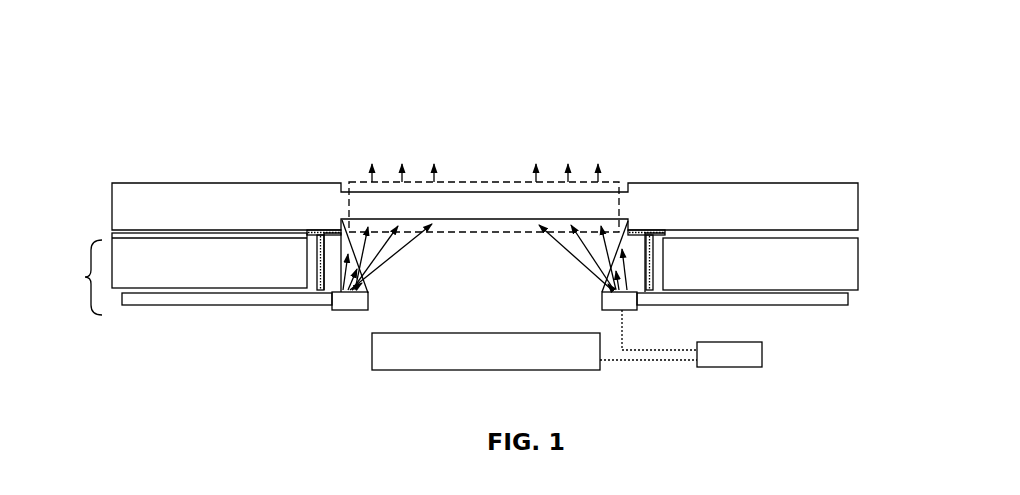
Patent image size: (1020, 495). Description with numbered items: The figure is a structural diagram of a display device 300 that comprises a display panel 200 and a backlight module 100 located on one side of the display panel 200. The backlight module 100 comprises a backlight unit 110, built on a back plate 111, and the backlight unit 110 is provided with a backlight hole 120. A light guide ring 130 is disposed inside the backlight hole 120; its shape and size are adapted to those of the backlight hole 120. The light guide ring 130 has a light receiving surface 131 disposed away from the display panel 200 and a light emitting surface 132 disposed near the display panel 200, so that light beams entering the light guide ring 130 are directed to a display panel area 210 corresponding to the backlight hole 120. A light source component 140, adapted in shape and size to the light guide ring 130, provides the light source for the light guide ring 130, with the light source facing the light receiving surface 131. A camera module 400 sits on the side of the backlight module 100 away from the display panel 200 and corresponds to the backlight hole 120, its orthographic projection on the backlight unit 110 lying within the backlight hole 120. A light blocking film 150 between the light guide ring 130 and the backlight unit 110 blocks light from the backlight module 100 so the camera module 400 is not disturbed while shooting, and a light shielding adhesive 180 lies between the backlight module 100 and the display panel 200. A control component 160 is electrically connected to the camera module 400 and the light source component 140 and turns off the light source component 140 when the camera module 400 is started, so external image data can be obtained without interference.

The display device 300 is at (153, 80).
The display panel 200 is at (132, 193).
The display panel area 210 is at (620, 179).
The backlight module 100 is at (453, 270).
The backlight unit 110 is at (132, 252).
The back plate 111 is at (213, 300).
The light blocking film 150 is at (316, 248).
The light shielding adhesive 180 is at (646, 232).
The light guide ring 130 is at (332, 284).
The light receiving surface 131 is at (365, 296).
The light emitting surface 132 is at (366, 266).
The light source component 140 is at (353, 303).
The backlight hole 120 is at (492, 297).
The camera module 400 is at (403, 362).
The control component 160 is at (728, 362).